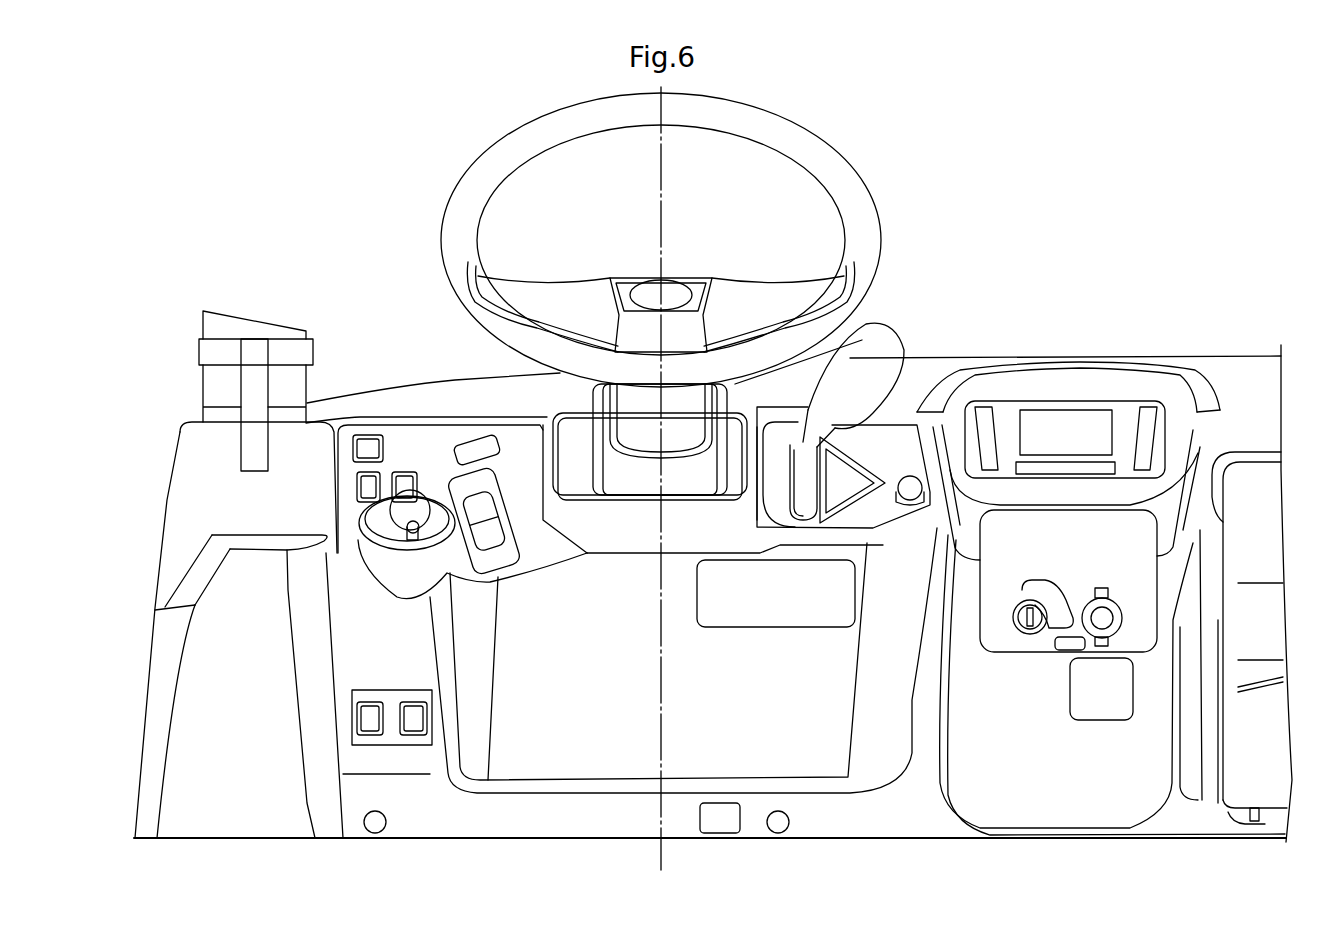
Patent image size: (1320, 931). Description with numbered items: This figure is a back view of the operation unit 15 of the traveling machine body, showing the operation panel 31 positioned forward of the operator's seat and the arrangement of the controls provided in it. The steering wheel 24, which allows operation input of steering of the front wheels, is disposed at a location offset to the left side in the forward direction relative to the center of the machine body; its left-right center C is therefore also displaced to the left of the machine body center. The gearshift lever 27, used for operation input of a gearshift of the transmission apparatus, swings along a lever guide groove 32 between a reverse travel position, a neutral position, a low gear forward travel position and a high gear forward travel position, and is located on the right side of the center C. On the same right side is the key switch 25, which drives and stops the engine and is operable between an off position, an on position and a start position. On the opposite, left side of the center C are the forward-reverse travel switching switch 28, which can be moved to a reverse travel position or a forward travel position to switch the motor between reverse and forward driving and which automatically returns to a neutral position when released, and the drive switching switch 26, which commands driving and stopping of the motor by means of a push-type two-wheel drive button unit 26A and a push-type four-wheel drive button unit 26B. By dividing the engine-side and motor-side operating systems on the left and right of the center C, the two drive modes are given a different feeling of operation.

The operation unit 15 is at (947, 206).
The steering wheel 24 is at (451, 211).
The key switch 25 is at (1037, 628).
The drive switching switch 26 is at (390, 740).
The two-wheel drive button unit 26A is at (370, 708).
The four-wheel drive button unit 26B is at (408, 708).
The gearshift lever 27 is at (880, 335).
The forward-reverse travel switching switch 28 is at (490, 503).
The operation panel 31 is at (428, 435).
The lever guide groove 32 is at (812, 497).
The center in the left-right direction of the steering wheel C is at (662, 222).